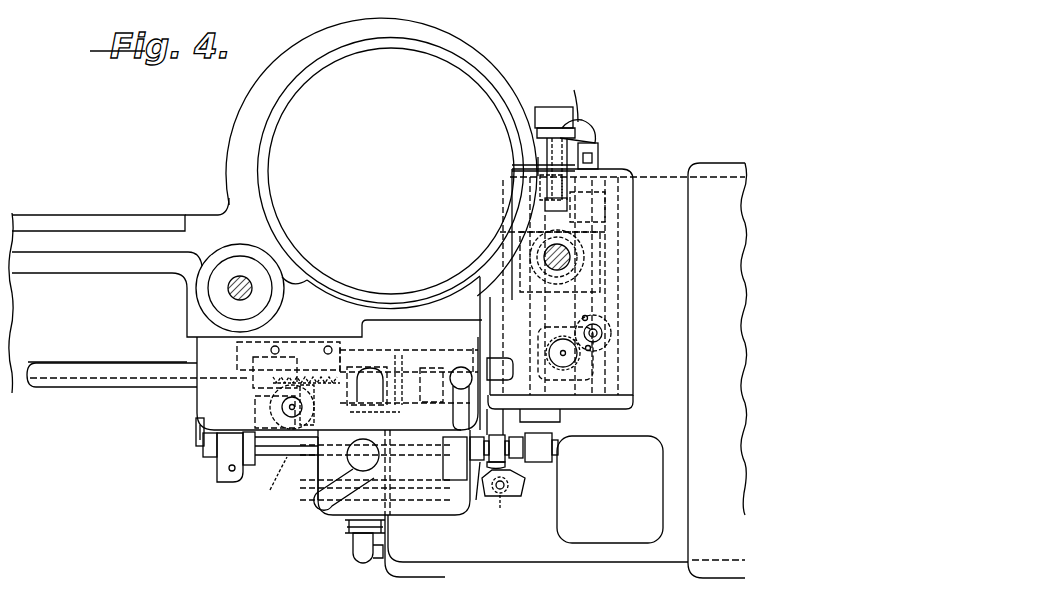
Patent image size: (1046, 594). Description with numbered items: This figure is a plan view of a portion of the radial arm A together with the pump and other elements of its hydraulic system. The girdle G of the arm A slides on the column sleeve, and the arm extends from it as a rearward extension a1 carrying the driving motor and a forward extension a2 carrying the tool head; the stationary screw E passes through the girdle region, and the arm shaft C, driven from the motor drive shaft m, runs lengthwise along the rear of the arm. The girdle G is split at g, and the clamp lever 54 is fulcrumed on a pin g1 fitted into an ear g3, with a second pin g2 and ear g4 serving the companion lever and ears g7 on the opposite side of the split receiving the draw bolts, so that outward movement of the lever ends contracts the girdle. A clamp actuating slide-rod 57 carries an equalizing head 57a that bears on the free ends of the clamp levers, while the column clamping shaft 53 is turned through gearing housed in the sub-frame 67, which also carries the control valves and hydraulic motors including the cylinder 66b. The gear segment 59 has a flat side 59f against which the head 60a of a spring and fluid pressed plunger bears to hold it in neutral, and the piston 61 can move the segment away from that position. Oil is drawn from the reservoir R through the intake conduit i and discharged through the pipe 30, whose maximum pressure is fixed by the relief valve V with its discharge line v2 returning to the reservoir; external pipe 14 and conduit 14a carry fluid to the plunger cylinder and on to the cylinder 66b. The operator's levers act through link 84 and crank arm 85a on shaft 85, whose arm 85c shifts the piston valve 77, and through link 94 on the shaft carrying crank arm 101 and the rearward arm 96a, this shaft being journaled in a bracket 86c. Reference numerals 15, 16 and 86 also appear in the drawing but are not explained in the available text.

The girdle G is at (482, 53).
The radial arm A is at (204, 213).
The arm extension a2 is at (104, 328).
The arm shaft C is at (88, 388).
The stationary screw E is at (230, 292).
The housing 15 is at (237, 361).
The piston 61 is at (306, 373).
The gear segment 59 is at (270, 412).
The plunger head 60a is at (297, 412).
The casing 16 is at (478, 312).
The external pipe 14 is at (420, 392).
The external conduit 14a is at (375, 421).
The pump discharge pipe 30 is at (453, 408).
The cylinder 66b is at (452, 455).
The link 84 is at (197, 420).
The link 94 is at (199, 435).
The crank arm 85a is at (205, 450).
The arm 96a is at (220, 467).
The block 86 is at (252, 467).
The shaft 85 is at (270, 450).
The flat side 59f is at (274, 482).
The clamp actuating slide-rod 57 is at (598, 232).
The equalizing head 57a is at (599, 149).
The pin g1 is at (548, 106).
The ear g3 is at (574, 96).
The clamp lever 54 is at (582, 126).
The ear g7 is at (567, 190).
The split g is at (531, 159).
The pin g2 is at (528, 200).
The ear g4 is at (516, 228).
The column clamping shaft 53 is at (568, 262).
The sub-frame 67 is at (610, 368).
The motor drive shaft m is at (507, 376).
The piston valve 77 is at (500, 430).
The crank arm 101 is at (518, 458).
The bracket 86c is at (553, 455).
The relief valve V is at (512, 497).
The discharge line v2 is at (500, 513).
The arm 85c is at (478, 500).
The reservoir R is at (528, 563).
The intake conduit i is at (360, 560).
The arm extension a1 is at (717, 370).